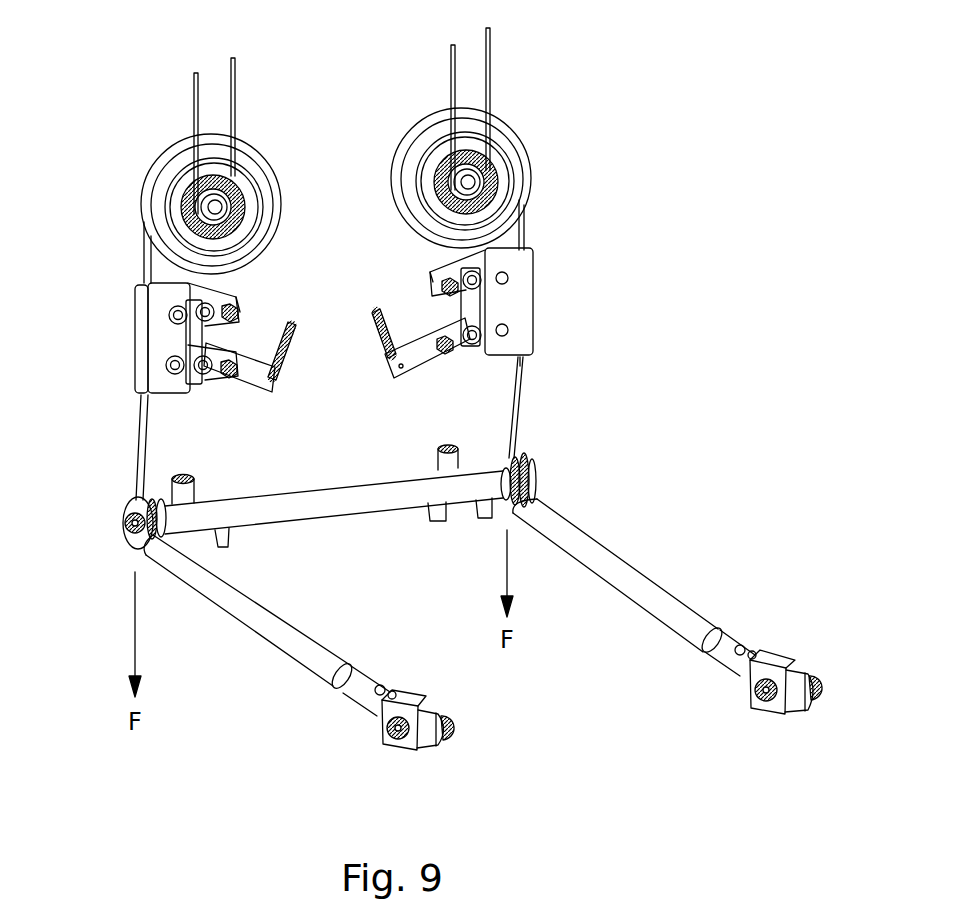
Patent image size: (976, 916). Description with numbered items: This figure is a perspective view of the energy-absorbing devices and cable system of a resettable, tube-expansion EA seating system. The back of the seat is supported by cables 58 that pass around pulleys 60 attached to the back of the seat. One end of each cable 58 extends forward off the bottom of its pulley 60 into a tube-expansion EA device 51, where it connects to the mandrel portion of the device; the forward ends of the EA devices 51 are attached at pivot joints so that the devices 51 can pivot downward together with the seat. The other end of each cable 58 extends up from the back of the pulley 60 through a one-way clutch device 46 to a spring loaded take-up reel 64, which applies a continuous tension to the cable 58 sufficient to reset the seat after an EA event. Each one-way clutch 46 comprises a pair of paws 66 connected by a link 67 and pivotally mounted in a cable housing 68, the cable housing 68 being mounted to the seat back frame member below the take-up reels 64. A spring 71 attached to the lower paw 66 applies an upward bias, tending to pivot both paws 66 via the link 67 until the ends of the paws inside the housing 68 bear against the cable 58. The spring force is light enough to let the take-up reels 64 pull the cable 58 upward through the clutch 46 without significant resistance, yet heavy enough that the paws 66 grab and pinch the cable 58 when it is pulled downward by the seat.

The one-way clutch device 46 is at (351, 248).
The tube-expansion EA device 51 is at (660, 590).
The cable 58 is at (137, 438).
The pulley 60 is at (531, 453).
The spring loaded take-up reel 64 is at (162, 158).
The paw 66 is at (432, 271).
The link 67 is at (237, 333).
The cable housing 68 is at (533, 253).
The spring 71 is at (291, 357).